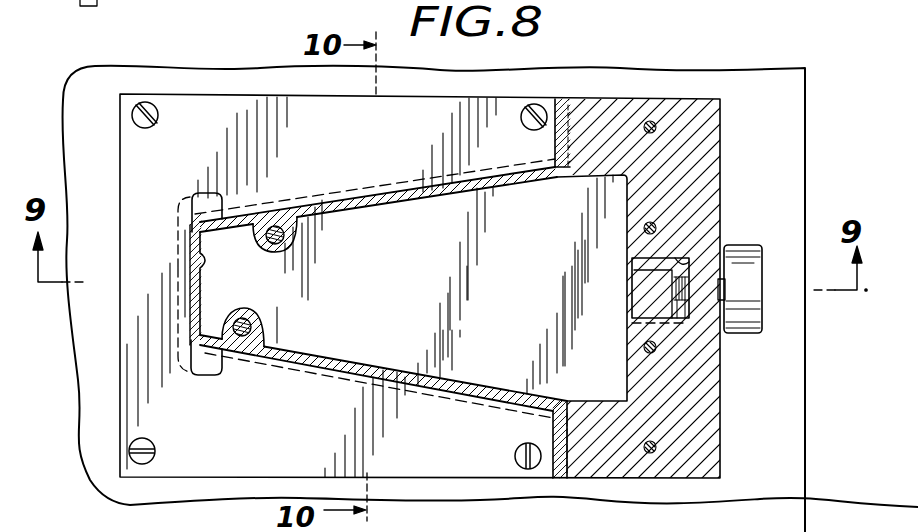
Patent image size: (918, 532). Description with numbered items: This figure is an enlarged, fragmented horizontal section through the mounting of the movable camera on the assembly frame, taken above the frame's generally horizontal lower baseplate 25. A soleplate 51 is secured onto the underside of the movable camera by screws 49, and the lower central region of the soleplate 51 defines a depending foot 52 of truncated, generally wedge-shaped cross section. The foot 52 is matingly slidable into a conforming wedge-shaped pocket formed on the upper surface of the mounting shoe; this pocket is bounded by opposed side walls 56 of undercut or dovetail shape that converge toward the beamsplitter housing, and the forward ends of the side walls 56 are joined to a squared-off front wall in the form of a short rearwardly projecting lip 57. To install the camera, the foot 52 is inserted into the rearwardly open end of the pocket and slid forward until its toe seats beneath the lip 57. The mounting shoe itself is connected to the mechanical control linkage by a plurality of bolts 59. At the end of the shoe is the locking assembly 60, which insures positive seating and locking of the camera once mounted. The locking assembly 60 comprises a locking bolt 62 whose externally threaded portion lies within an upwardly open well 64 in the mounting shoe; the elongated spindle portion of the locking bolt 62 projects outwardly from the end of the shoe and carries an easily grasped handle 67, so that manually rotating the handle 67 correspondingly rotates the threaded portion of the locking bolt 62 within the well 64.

The lower baseplate 25 is at (796, 403).
The screws 49 is at (247, 309).
The soleplate 51 is at (646, 108).
The depending foot 52 is at (385, 204).
The side walls 56 is at (350, 195).
The lip 57 is at (199, 258).
The bolts 59 is at (152, 460).
The locking assembly 60 is at (618, 325).
The locking bolt 62 is at (684, 303).
The well 64 is at (689, 262).
The handle 67 is at (757, 247).